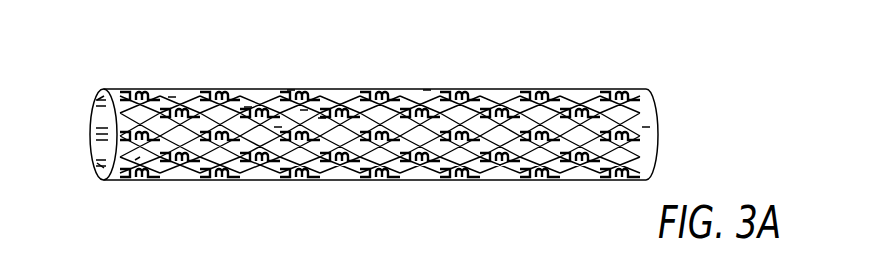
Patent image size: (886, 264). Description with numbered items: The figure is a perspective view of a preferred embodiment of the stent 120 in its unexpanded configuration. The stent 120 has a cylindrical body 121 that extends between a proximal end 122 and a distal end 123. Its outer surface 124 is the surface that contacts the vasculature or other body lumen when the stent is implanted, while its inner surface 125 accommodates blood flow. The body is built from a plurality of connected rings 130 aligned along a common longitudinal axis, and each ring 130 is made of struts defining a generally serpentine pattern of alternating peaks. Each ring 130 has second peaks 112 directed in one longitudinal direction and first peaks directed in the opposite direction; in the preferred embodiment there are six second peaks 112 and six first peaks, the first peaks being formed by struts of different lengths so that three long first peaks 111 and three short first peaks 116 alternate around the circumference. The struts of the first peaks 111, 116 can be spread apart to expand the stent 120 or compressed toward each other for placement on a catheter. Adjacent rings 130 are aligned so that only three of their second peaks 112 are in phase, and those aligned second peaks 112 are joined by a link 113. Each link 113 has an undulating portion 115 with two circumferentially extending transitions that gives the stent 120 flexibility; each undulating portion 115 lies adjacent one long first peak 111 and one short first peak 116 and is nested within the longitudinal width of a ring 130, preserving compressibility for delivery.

The long first peak 111 is at (278, 127).
The second peak 112 is at (248, 107).
The link 113 is at (303, 110).
The undulating portion 115 is at (322, 118).
The short first peak 116 is at (290, 90).
The stent 120 is at (624, 68).
The cylindrical body 121 is at (137, 160).
The proximal end 122 is at (98, 108).
The distal end 123 is at (646, 127).
The outer surface 124 is at (172, 97).
The inner surface 125 is at (98, 163).
The ring 130 is at (427, 90).